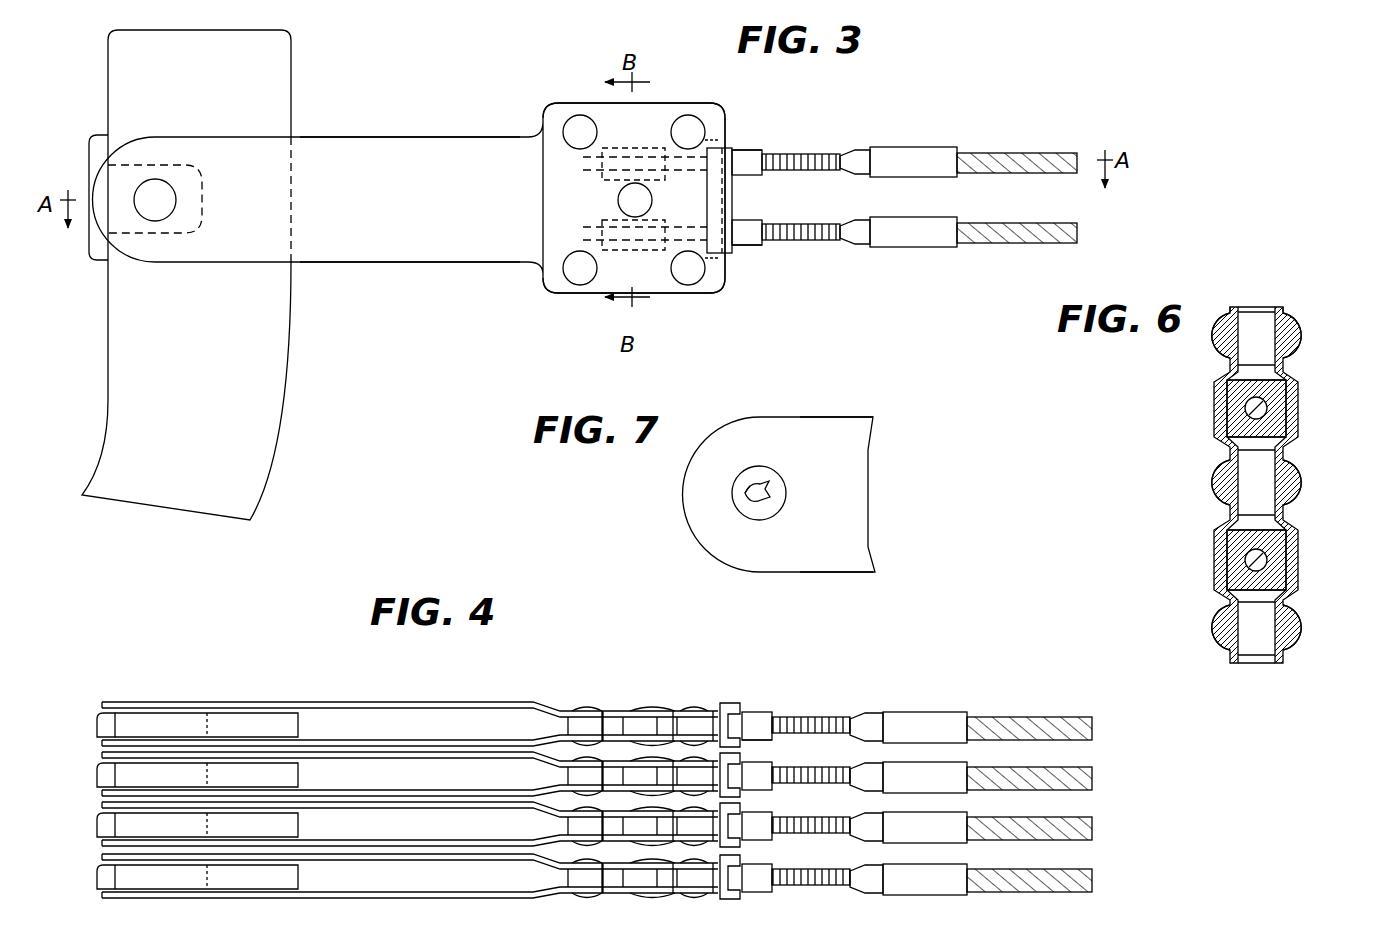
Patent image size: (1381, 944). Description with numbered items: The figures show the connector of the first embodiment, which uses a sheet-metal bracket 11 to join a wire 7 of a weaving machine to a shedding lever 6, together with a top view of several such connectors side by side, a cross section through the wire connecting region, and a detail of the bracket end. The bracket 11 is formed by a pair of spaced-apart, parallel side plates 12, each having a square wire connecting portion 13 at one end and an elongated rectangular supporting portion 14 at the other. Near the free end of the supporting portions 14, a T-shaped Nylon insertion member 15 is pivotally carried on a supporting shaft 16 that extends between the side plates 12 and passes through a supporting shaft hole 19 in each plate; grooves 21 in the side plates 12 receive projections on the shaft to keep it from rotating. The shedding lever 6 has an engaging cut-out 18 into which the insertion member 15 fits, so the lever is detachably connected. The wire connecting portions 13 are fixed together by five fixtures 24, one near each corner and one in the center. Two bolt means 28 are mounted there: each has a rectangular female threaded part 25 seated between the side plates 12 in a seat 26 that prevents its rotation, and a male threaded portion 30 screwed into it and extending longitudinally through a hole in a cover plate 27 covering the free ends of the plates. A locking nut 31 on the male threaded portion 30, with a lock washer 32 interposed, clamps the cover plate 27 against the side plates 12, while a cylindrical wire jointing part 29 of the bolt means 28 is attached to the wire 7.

In FIG. 3, the shedding lever 6 is at (278, 380).
In FIG. 4, the shedding lever 6 is at (108, 741).
In FIG. 3, the wire 7 is at (1040, 228).
In FIG. 4, the wire 7 is at (1092, 740).
In FIG. 3, the bracket 11 is at (430, 266).
In FIG. 7, the bracket 11 is at (845, 580).
In FIG. 6, the bracket 11 is at (1297, 538).
In FIG. 4, the bracket 11 is at (485, 700).
In FIG. 3, the side plates 12 is at (408, 128).
In FIG. 7, the side plates 12 is at (805, 580).
In FIG. 6, the side plates 12 is at (1185, 570).
In FIG. 4, the side plates 12 is at (388, 745).
In FIG. 3, the wire connecting portion 13 is at (648, 272).
In FIG. 6, the wire connecting portion 13 is at (1288, 450).
In FIG. 3, the supporting portion 14 is at (348, 256).
In FIG. 7, the supporting portion 14 is at (855, 514).
In FIG. 3, the insertion member 15 is at (101, 135).
In FIG. 4, the insertion member 15 is at (97, 718).
In FIG. 3, the supporting shaft 16 is at (157, 215).
In FIG. 3, the engaging recessed portion or cut-out 18 is at (190, 165).
In FIG. 4, the engaging recessed portion or cut-out 18 is at (207, 713).
In FIG. 7, the supporting shaft hole 19 is at (766, 486).
In FIG. 7, the grooves 21 is at (750, 510).
In FIG. 3, the fixtures 24 is at (625, 198).
In FIG. 6, the fixtures 24 is at (1218, 340).
In FIG. 4, the fixtures 24 is at (630, 708).
In FIG. 3, the female threaded part 25 is at (650, 186).
In FIG. 6, the female threaded part 25 is at (1232, 398).
In FIG. 4, the female threaded part 25 is at (678, 720).
In FIG. 6, the seat 26 is at (1287, 400).
In FIG. 3, the cover plate 27 is at (720, 176).
In FIG. 4, the cover plate 27 is at (735, 718).
In FIG. 3, the bolt means 28 is at (832, 156).
In FIG. 6, the bolt means 28 is at (1240, 418).
In FIG. 4, the bolt means 28 is at (862, 718).
In FIG. 3, the cylindrical wire jointing part 29 is at (930, 157).
In FIG. 4, the cylindrical wire jointing part 29 is at (940, 720).
In FIG. 3, the male threaded portion 30 is at (796, 155).
In FIG. 6, the male threaded portion 30 is at (1263, 403).
In FIG. 4, the male threaded portion 30 is at (815, 722).
In FIG. 3, the locking nut 31 is at (768, 222).
In FIG. 4, the locking nut 31 is at (768, 736).
In FIG. 3, the lock washer 32 is at (747, 197).
In FIG. 4, the lock washer 32 is at (776, 714).